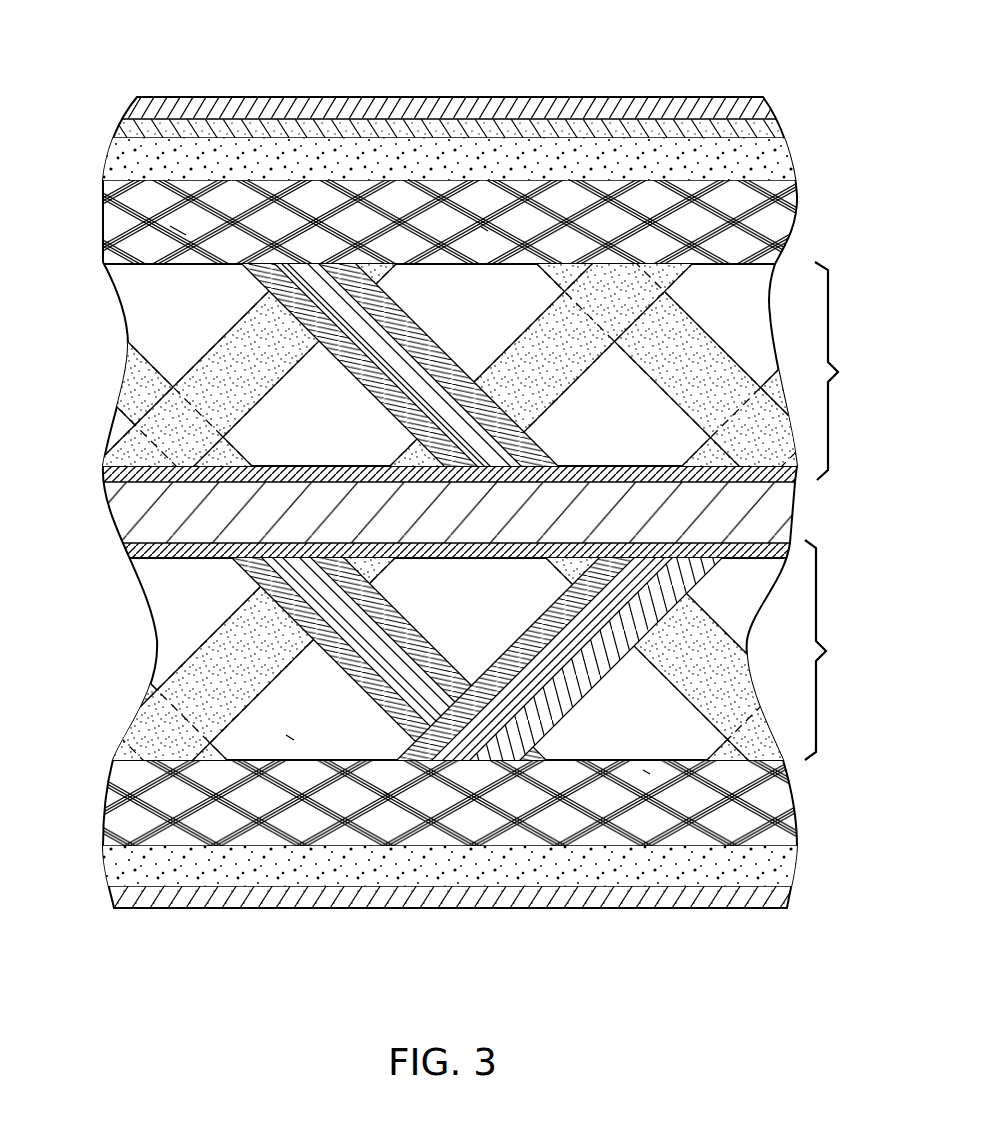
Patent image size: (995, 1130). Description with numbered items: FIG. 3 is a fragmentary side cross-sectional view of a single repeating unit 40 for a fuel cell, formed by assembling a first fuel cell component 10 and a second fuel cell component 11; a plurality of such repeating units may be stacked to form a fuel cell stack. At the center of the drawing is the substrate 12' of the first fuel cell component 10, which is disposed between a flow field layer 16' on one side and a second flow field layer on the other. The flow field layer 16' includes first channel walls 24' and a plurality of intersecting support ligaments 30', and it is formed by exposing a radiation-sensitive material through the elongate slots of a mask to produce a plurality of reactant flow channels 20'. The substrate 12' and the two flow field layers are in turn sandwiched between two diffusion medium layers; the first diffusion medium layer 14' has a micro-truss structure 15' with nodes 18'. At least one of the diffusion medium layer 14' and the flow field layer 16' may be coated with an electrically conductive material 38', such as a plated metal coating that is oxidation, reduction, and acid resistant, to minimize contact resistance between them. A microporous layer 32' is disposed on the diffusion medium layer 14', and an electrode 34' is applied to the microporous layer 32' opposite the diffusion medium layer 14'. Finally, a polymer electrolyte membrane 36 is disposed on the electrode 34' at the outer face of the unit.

The repeating unit 40 is at (730, 70).
The first fuel cell component 10 is at (806, 251).
The second fuel cell component 11 is at (821, 545).
The polymer electrolyte membrane 36 is at (790, 103).
The electrode 34' is at (484, 128).
The microporous layer 32' is at (487, 159).
The first diffusion medium layer 14' is at (487, 222).
The micro-truss structure 15' is at (161, 262).
The nodes 18' is at (500, 266).
The flow field layer 16' is at (844, 371).
The reactant flow channels 20' is at (396, 365).
The first channel walls 24' is at (398, 365).
The support ligaments 30' is at (497, 365).
The electrically conductive material 38' is at (522, 363).
The substrate 12' is at (485, 512).